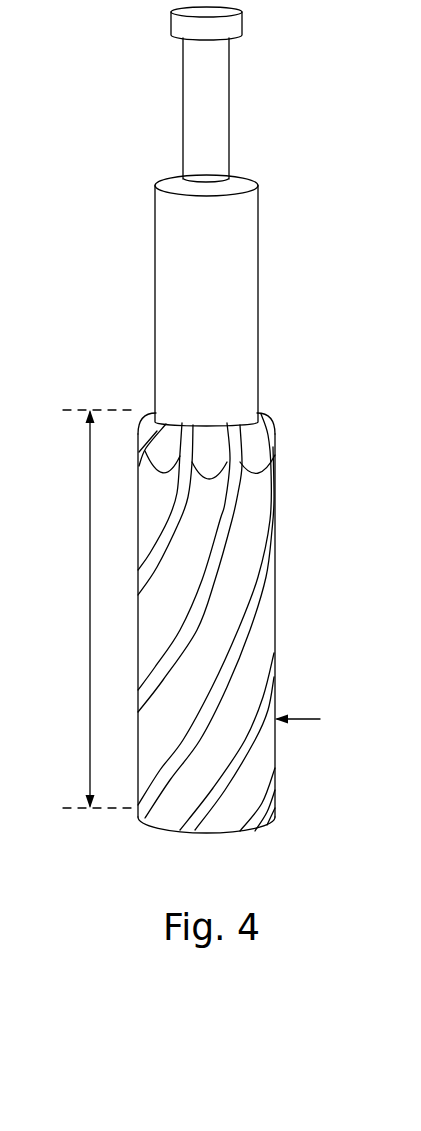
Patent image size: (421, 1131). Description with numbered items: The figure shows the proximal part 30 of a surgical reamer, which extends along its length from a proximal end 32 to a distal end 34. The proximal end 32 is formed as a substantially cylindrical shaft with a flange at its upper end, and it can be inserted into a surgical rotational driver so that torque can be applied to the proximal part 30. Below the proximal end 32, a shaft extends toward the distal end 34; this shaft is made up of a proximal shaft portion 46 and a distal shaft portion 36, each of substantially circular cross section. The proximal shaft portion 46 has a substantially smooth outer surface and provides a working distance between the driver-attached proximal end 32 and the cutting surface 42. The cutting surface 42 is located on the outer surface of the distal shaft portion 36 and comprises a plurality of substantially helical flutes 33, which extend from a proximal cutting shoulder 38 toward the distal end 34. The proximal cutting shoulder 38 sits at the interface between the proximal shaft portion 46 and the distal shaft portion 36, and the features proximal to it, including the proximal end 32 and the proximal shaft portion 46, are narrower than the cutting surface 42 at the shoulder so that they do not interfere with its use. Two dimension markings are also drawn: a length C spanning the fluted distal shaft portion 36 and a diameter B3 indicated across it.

The proximal part 30 is at (304, 162).
The proximal end 32 is at (224, 87).
The helical flutes 33 is at (245, 491).
The distal end 34 is at (275, 821).
The distal shaft portion 36 is at (277, 656).
The proximal cutting shoulder 38 is at (297, 421).
The cutting surface 42 is at (255, 601).
The proximal shaft portion 46 is at (236, 288).
The length of fluted portion C is at (97, 609).
The diameter of fluted portion B3 is at (322, 721).